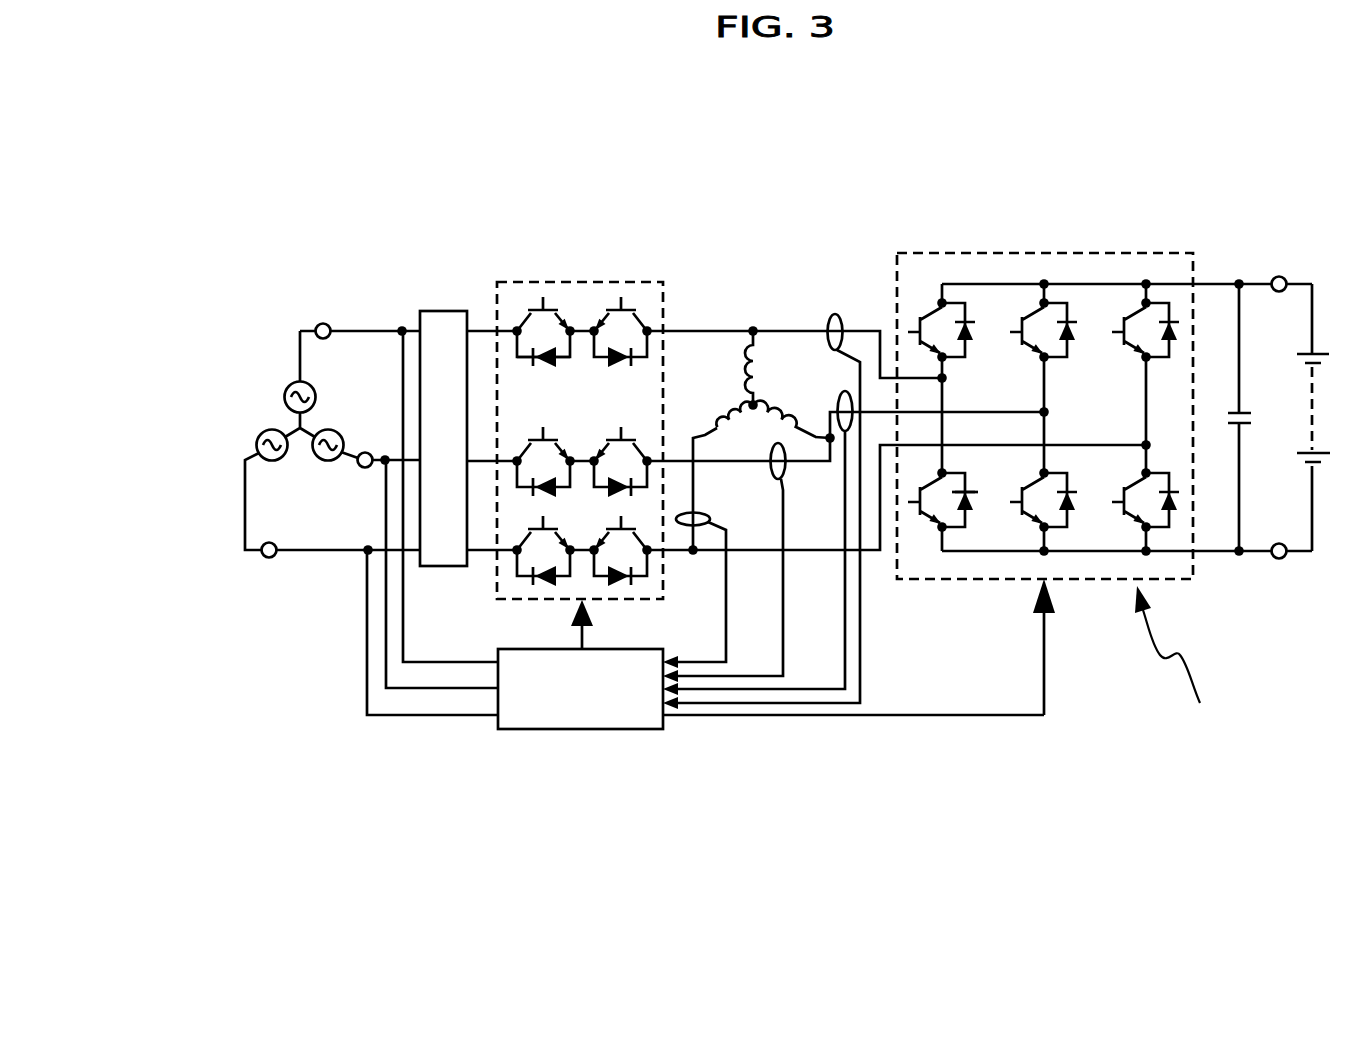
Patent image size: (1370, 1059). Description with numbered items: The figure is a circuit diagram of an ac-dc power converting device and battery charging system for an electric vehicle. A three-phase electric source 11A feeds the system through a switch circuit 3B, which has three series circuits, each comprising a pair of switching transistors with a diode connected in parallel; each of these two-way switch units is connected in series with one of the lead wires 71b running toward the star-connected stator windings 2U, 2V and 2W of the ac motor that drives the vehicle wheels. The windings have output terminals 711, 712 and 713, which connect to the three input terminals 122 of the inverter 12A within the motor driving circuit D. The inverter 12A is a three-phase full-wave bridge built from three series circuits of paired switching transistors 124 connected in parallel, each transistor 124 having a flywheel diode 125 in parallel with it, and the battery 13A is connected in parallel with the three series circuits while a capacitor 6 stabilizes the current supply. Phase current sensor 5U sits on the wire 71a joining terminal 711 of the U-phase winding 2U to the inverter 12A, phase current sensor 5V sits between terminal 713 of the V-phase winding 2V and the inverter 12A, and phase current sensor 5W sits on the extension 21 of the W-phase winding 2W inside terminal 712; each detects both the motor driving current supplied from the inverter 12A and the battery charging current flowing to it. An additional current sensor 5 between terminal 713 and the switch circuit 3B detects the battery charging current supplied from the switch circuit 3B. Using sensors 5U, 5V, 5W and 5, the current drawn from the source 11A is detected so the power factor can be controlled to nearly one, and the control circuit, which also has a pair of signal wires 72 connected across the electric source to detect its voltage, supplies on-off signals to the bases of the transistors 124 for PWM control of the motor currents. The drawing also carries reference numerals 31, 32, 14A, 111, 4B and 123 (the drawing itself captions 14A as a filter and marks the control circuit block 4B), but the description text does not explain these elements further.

The switch circuit 3B is at (538, 342).
The switching element (transistor) 31 is at (513, 249).
The diode 32 is at (492, 283).
The filter 14A is at (367, 348).
The input terminal 111 is at (301, 436).
The three-phase electric source 11A is at (288, 366).
The control circuit 4B is at (776, 721).
The signal wires 72 is at (432, 588).
The wire 71a is at (919, 523).
The lead wires 71b is at (740, 523).
The output terminal 711 is at (732, 234).
The output terminal 712 is at (712, 704).
The output terminal 713 is at (920, 625).
The stator winding 2U is at (722, 294).
The stator winding 2V is at (786, 284).
The stator winding 2W is at (695, 279).
The extension of stator winding 21 is at (790, 631).
The current sensor 5 is at (787, 497).
The phase current sensor 5U is at (773, 420).
The phase current sensor 5V is at (758, 439).
The phase current sensor 5W is at (719, 666).
The inverter 12A is at (1045, 422).
The input terminals 122 is at (996, 265).
The switching transistors 124 is at (1018, 447).
The flywheel diode 125 is at (1043, 420).
The motor driving circuit D is at (1175, 666).
The capacitor 6 is at (1246, 353).
The output terminal 123 is at (1286, 422).
The battery 13A is at (1325, 486).